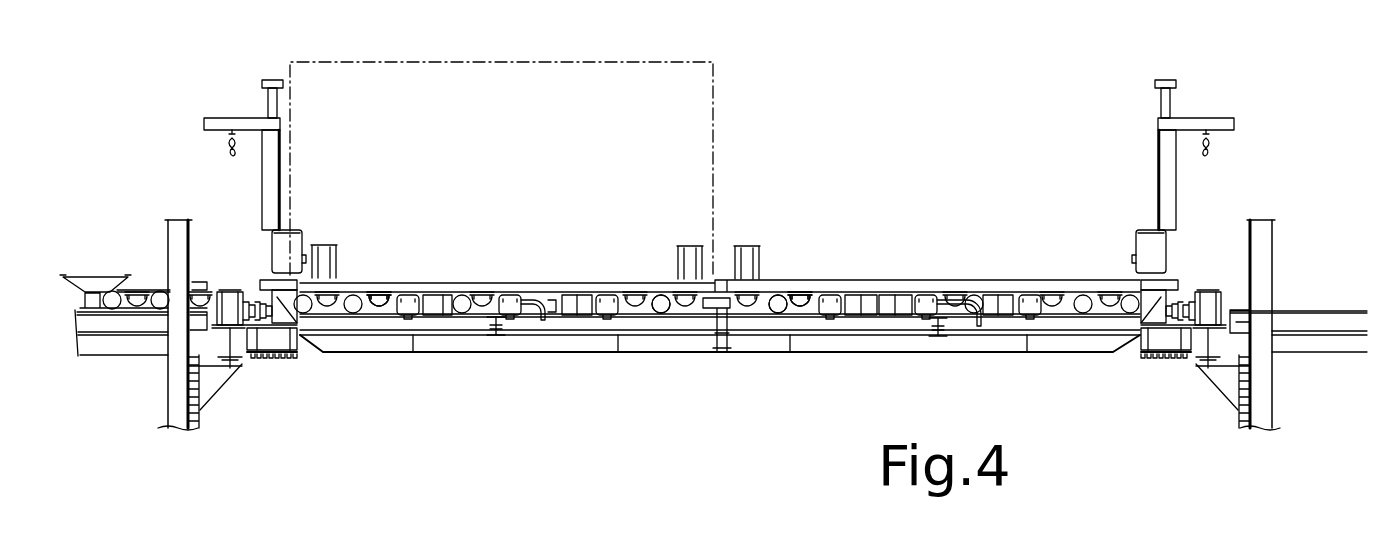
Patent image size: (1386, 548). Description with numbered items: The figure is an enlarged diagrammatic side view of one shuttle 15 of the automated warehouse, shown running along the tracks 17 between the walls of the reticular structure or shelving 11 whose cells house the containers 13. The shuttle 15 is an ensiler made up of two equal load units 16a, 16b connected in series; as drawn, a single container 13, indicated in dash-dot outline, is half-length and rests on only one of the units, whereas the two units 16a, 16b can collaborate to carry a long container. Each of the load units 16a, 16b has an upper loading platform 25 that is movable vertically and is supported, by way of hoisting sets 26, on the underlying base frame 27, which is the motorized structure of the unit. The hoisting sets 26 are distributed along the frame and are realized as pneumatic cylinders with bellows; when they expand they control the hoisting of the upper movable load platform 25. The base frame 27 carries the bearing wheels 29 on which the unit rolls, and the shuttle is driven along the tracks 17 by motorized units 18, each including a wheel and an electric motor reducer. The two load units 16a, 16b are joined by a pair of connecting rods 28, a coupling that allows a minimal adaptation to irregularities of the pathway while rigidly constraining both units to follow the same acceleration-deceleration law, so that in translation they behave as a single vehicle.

The reticular structure 11 is at (170, 400).
The container 13 is at (488, 62).
The motorized shuttle 15 is at (570, 367).
The load unit 16a is at (490, 242).
The load unit 16b is at (868, 255).
The track 17 is at (257, 345).
The motorized unit 18 is at (243, 270).
The upper loading platform 25 is at (558, 281).
The hoisting set 26 is at (377, 291).
The base frame 27 is at (460, 337).
The connecting rod 28 is at (717, 345).
The bearing wheel 29 is at (661, 314).